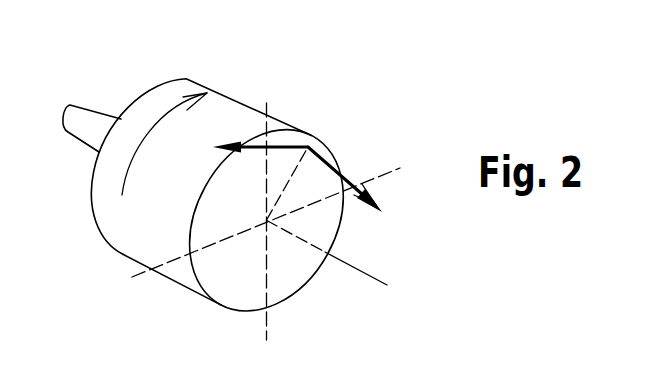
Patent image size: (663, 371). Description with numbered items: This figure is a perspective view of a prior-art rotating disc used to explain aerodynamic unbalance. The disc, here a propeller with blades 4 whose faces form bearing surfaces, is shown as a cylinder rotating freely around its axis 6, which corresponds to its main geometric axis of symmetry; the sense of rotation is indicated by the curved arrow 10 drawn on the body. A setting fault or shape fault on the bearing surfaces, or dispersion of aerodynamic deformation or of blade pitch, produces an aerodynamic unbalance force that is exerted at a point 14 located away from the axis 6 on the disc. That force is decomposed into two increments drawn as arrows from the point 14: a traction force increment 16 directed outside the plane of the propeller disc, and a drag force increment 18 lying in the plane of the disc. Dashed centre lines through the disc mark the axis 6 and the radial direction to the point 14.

The blades 4 is at (423, 68).
The axis 6 is at (367, 274).
The direction of rotation 10 is at (150, 133).
The point 14 is at (308, 147).
The traction force increment 16 is at (327, 152).
The drag force increment 18 is at (280, 147).